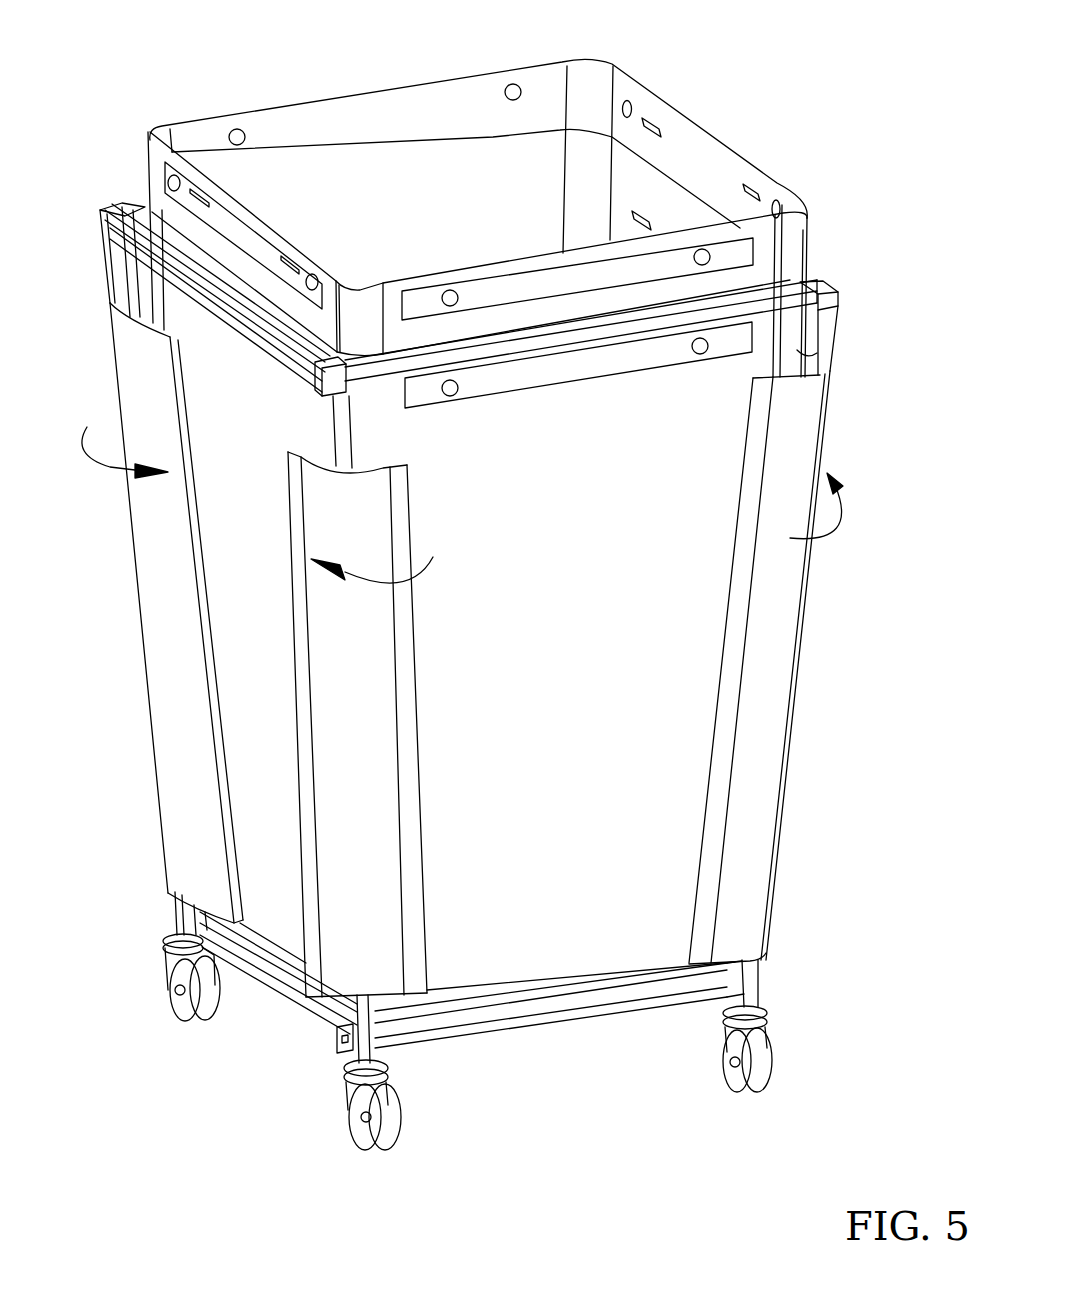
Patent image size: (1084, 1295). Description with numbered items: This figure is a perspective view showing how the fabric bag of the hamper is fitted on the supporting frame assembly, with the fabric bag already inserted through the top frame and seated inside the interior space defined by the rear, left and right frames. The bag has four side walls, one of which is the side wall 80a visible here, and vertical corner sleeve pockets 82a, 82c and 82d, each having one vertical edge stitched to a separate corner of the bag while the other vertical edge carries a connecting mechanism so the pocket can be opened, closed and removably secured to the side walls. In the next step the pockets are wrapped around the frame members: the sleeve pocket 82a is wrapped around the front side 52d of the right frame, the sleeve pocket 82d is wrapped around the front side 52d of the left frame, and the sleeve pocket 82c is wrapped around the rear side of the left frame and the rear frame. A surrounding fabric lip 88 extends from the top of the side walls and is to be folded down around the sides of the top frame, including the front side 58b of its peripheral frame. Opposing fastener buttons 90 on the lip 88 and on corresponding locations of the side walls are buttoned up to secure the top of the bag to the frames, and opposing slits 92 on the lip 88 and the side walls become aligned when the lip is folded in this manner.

The fabric lip 88 is at (388, 108).
The slits 92 is at (652, 216).
The front side 58b is at (755, 317).
The front side 52d is at (830, 340).
The fastener buttons 90 is at (696, 263).
The side wall 80a is at (645, 782).
The corner sleeve pocket 82a is at (790, 580).
The corner sleeve pocket 82c is at (157, 530).
The corner sleeve pocket 82d is at (373, 693).